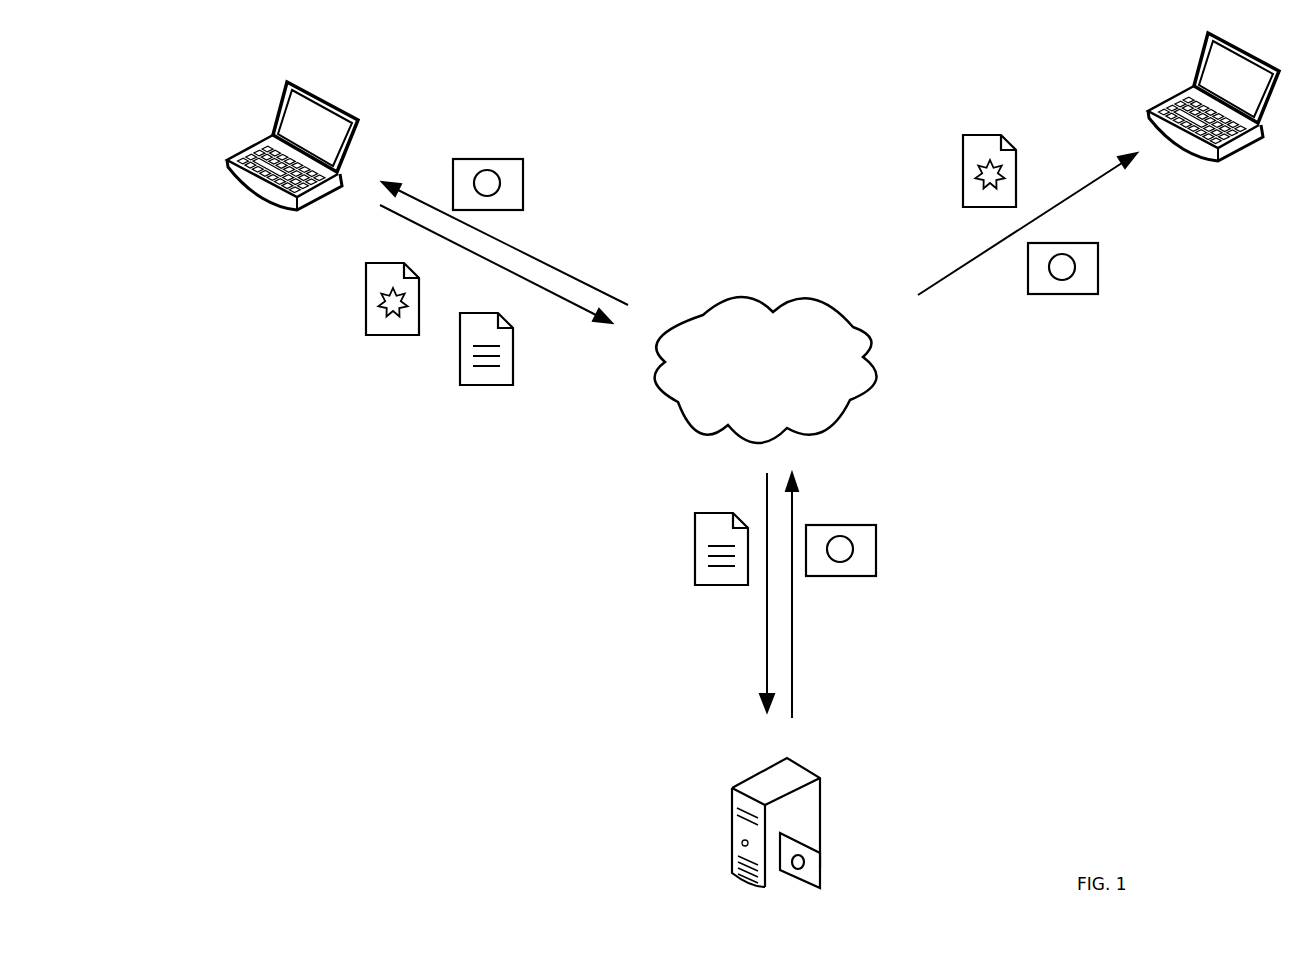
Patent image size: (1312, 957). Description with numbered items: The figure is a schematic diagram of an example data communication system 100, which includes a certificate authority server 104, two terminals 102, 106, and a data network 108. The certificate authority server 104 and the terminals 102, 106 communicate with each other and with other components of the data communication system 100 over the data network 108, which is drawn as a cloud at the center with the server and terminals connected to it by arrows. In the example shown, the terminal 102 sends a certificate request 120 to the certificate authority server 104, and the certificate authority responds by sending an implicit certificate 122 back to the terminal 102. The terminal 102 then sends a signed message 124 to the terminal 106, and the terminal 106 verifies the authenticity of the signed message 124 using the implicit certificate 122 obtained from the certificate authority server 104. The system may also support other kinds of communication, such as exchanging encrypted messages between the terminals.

The data communication system 100 is at (1138, 643).
The terminal 102 is at (277, 110).
The certificate authority server 104 is at (813, 775).
The terminal 106 is at (1180, 90).
The data network 108 is at (755, 385).
The certificate request 120 is at (514, 350).
The implicit certificate 122 is at (523, 182).
The signed message 124 is at (366, 310).